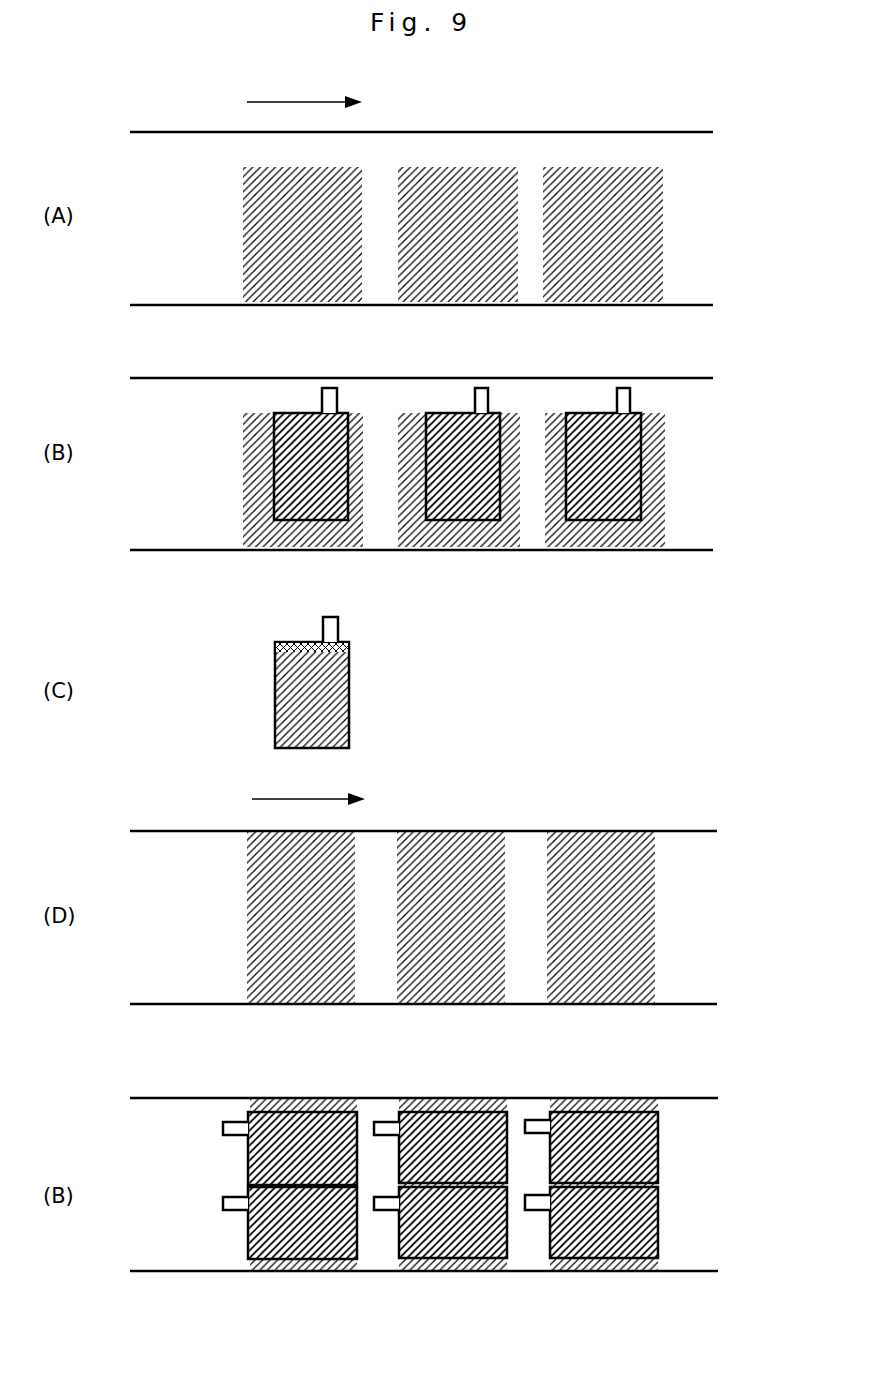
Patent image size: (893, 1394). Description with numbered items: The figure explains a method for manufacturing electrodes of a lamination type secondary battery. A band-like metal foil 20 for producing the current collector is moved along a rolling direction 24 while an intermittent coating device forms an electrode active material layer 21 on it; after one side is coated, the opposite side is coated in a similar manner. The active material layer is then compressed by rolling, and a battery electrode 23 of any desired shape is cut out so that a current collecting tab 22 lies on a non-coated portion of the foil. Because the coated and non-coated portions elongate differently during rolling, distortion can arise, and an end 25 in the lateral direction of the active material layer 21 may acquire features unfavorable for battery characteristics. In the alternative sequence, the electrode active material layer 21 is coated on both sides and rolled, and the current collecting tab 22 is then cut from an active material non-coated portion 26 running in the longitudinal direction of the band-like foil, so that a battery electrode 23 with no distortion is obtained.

The band-like metal foil 20 is at (560, 147).
The electrode active material layer 21 is at (302, 290).
The current collecting tab 22 is at (330, 398).
The battery electrode 23 is at (372, 685).
The rolling direction 24 is at (306, 433).
The end in lateral direction of the active material layer 25 is at (290, 645).
The active material non-coated portion 26 is at (372, 1238).